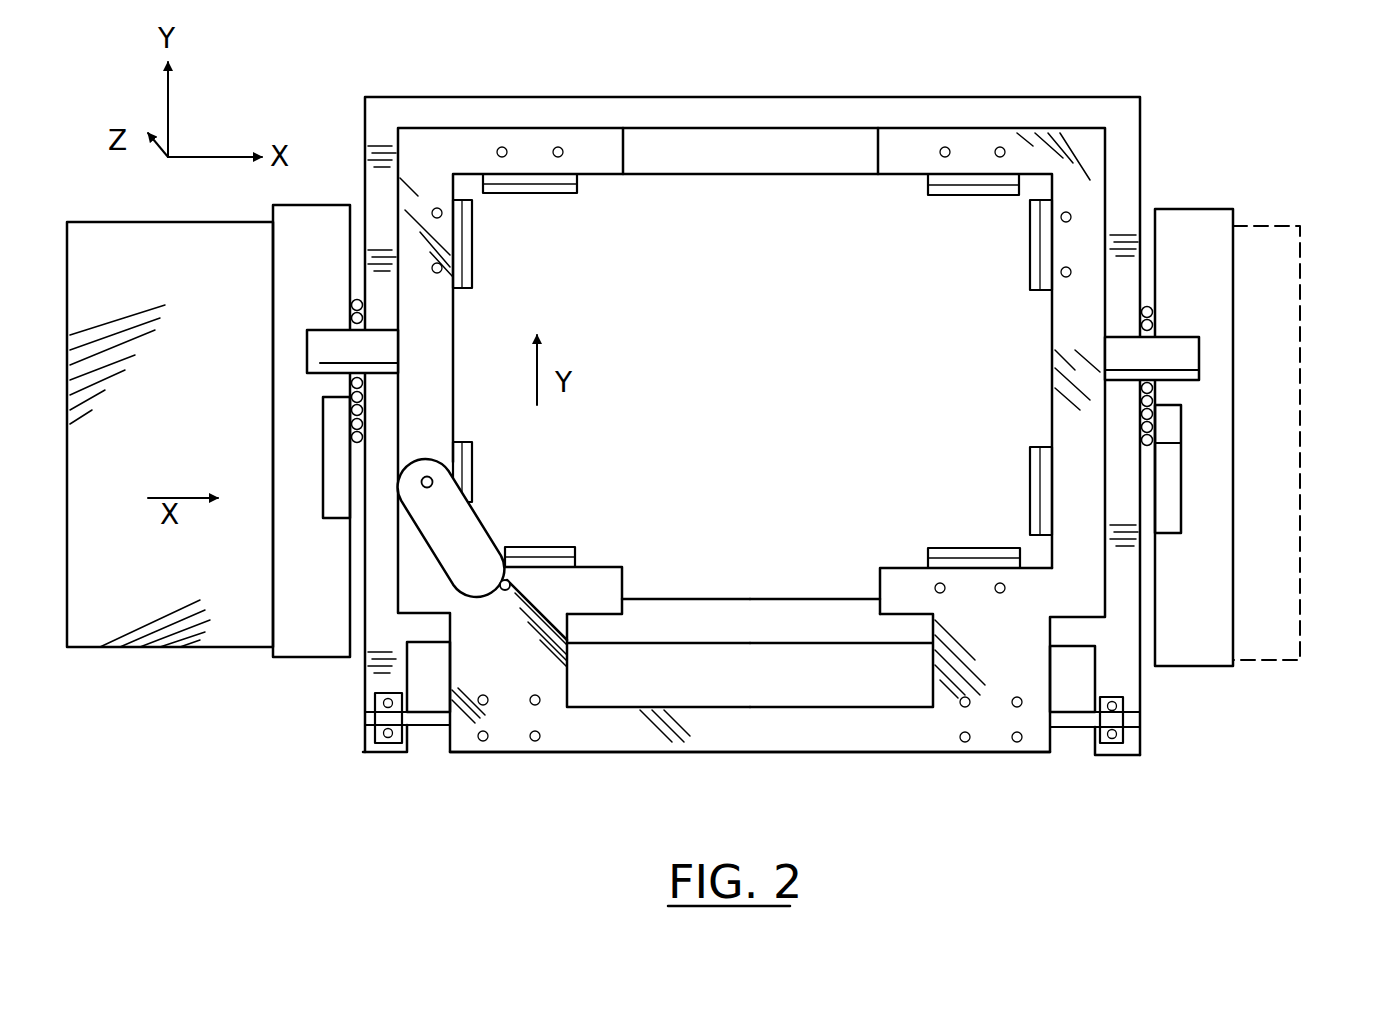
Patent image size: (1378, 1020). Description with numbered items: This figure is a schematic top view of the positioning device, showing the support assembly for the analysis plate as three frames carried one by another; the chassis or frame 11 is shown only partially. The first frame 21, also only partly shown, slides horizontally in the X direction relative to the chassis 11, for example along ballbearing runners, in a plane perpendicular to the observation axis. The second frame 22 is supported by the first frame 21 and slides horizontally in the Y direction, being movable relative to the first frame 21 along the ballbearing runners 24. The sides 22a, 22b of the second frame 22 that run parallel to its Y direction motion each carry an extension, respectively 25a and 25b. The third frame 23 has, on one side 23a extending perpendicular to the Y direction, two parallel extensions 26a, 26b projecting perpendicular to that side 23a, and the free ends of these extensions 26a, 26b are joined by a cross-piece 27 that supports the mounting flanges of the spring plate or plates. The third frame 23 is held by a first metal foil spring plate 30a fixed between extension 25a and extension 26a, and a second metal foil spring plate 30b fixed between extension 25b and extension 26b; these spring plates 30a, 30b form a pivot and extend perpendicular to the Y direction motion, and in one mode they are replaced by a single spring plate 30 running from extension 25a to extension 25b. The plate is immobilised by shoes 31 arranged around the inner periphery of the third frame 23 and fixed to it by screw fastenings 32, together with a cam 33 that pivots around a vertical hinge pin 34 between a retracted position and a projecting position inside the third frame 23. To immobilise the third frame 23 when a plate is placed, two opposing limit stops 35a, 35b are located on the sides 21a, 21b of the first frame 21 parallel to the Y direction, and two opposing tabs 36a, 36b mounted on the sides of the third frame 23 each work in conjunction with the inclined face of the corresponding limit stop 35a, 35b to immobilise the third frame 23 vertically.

The frame 11 is at (130, 650).
The first frame 21 is at (782, 435).
The side of the first frame 21a is at (290, 585).
The side of the first frame 21b is at (1268, 630).
The second frame 22 is at (768, 412).
The side of the second frame 22a is at (372, 623).
The side of the second frame 22b is at (1113, 608).
The third frame 23 is at (1108, 198).
The side of the third frame 23a is at (600, 582).
The ballbearing runners 24 is at (1152, 326).
The extension 25a is at (372, 742).
The extension 25b is at (1130, 742).
The extension 26a is at (540, 675).
The extension 26b is at (935, 665).
The cross-piece 27 is at (770, 738).
The metal foil spring plate 30 is at (768, 734).
The first metal foil spring plate 30a is at (430, 718).
The second metal foil spring plate 30b is at (1068, 720).
The shoes 31 is at (466, 243).
The screw fastenings 32 is at (558, 146).
The cam 33 is at (470, 538).
The vertical hinge pin 34 is at (435, 483).
The limit stop 35a is at (330, 465).
The limit stop 35b is at (1165, 492).
The tab 36a is at (322, 350).
The tab 36b is at (1180, 352).